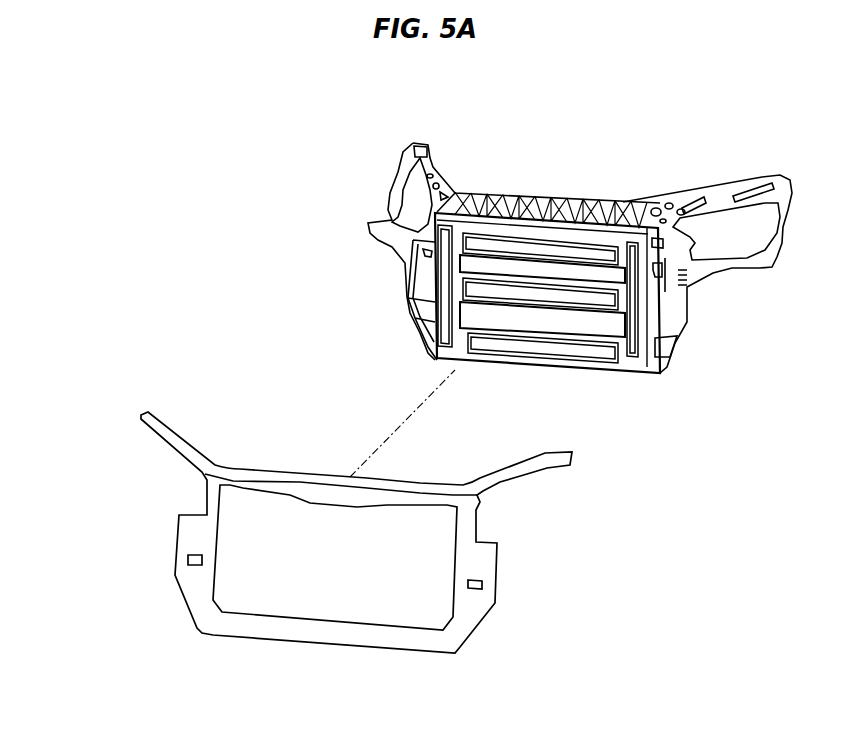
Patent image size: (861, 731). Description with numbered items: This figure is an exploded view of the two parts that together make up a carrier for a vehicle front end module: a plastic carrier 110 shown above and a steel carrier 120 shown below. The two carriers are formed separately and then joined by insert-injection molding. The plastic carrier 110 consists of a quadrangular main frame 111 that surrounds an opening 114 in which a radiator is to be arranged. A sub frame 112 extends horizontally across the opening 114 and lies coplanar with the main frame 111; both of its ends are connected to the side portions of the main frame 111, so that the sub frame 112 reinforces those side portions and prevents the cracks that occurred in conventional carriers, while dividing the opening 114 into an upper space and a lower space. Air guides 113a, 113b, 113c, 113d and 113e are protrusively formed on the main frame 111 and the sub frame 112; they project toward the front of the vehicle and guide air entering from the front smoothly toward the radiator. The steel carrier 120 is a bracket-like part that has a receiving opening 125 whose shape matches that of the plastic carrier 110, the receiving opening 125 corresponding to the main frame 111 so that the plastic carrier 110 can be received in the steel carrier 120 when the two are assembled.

The plastic carrier 110 is at (674, 168).
The main frame 111 is at (592, 233).
The sub frame 112 is at (497, 268).
The air guide 113a is at (538, 250).
The air guide 113b is at (500, 297).
The air guide 113c is at (605, 357).
The air guide 113d is at (448, 293).
The air guide 113e is at (632, 298).
The opening 114 is at (538, 322).
The steel carrier 120 is at (301, 565).
The receiving opening 125 is at (302, 580).